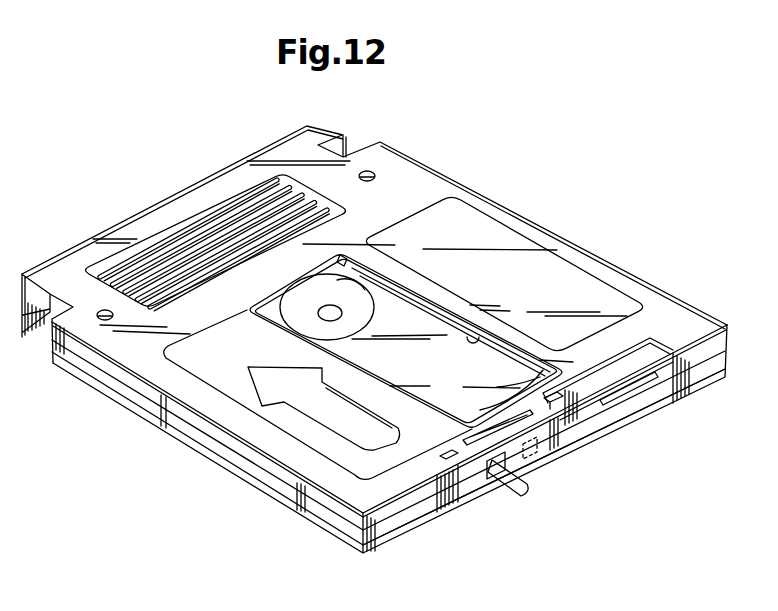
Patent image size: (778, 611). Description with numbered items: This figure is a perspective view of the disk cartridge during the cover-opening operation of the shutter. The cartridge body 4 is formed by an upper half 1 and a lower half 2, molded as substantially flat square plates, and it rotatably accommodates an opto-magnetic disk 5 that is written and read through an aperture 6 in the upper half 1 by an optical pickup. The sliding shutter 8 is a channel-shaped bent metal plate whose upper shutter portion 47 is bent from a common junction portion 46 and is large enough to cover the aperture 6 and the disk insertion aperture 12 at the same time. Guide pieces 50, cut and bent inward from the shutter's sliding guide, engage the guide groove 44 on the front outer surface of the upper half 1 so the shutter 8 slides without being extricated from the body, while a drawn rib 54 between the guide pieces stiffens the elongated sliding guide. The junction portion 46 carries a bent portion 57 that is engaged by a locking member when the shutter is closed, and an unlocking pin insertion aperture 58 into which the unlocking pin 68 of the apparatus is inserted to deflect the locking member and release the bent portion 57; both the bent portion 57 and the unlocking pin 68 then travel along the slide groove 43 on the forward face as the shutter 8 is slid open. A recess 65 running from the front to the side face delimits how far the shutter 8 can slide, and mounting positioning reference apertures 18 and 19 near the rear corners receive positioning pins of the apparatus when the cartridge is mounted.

The upper half 1 is at (282, 477).
The lower half 2 is at (320, 518).
The cartridge body 4 is at (298, 571).
The opto-magnetic disk 5 is at (417, 330).
The aperture 6 is at (473, 340).
The sliding shutter 8 is at (283, 420).
The disk insertion aperture 12 is at (368, 285).
The mounting positioning reference aperture 18 is at (100, 322).
The mounting positioning reference aperture 19 is at (373, 172).
The slide groove 43 is at (627, 393).
The guide groove 44 is at (626, 350).
The junction portion 46 is at (467, 490).
The upper shutter portion 47 is at (217, 378).
The guide piece 50 is at (457, 478).
The rib 54 is at (498, 425).
The bent portion 57 is at (540, 467).
The unlocking pin insertion aperture 58 is at (503, 490).
The recess 65 is at (352, 247).
The unlocking pin 68 is at (530, 490).